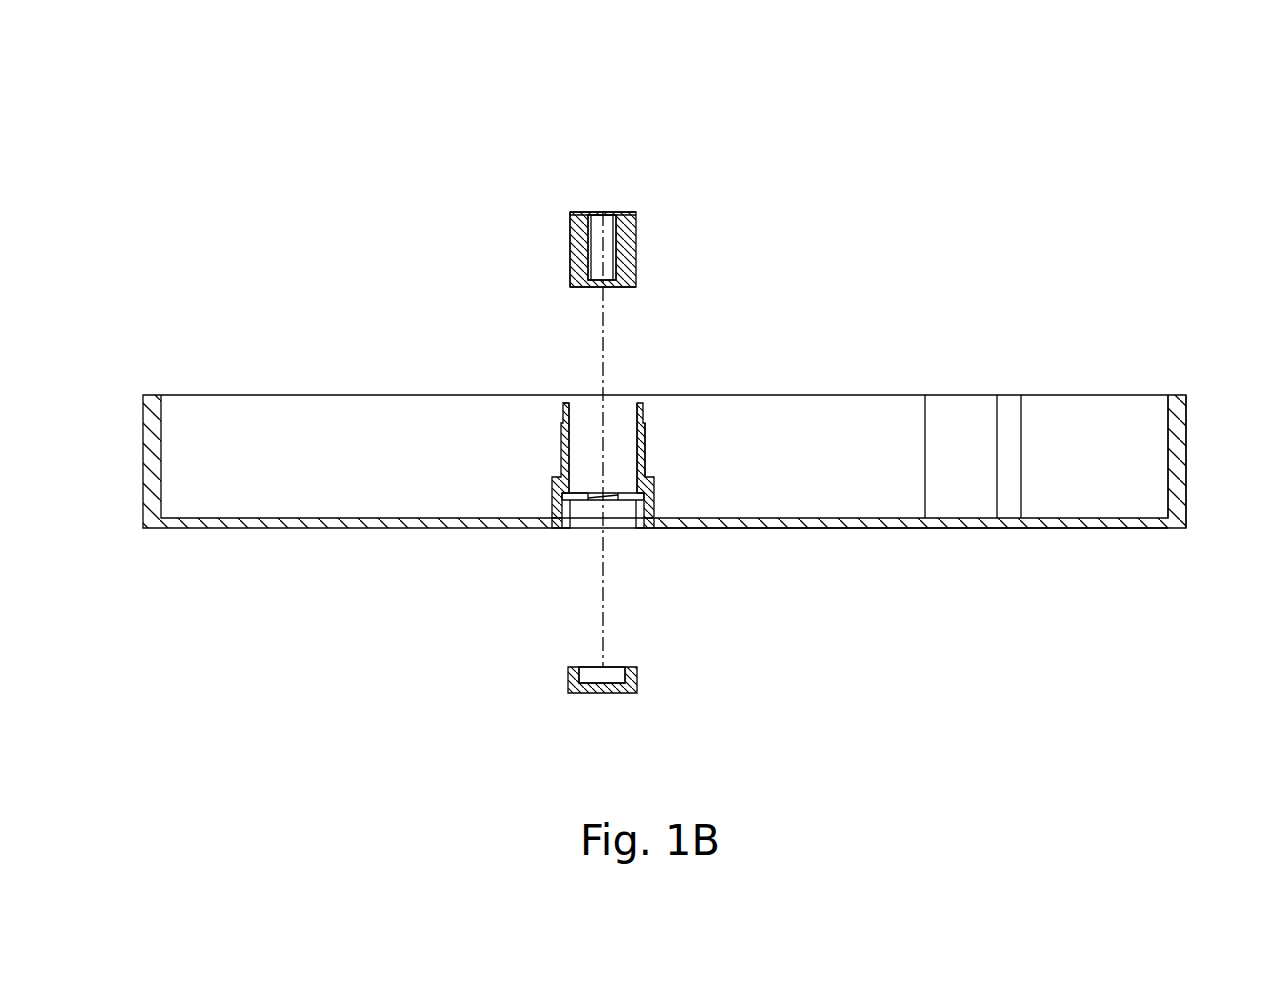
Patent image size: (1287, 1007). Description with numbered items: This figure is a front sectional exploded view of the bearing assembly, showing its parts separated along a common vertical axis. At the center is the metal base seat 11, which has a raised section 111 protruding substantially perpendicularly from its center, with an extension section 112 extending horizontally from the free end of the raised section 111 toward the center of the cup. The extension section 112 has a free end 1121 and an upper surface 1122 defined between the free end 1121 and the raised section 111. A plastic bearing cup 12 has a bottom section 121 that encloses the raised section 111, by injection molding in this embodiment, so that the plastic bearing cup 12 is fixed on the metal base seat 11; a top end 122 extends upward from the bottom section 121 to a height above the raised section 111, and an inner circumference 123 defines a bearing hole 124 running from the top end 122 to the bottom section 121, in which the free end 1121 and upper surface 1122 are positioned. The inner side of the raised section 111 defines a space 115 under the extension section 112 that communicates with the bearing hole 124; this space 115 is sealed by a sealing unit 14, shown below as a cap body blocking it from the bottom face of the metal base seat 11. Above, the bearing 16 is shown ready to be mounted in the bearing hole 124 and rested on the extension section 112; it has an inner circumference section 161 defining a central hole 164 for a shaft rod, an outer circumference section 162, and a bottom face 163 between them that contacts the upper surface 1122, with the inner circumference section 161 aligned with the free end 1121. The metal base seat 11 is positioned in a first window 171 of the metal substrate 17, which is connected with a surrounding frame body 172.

The metal base seat 11 is at (735, 520).
The plastic bearing cup 12 is at (561, 430).
The sealing unit 14 is at (583, 693).
The bearing 16 is at (668, 153).
The metal substrate 17 is at (1082, 528).
The raised section 111 is at (565, 518).
The extension section 112 is at (577, 500).
The space 115 is at (605, 523).
The bottom section 121 is at (555, 487).
The top end 122 is at (568, 398).
The inner circumference 123 is at (637, 424).
The bearing hole 124 is at (603, 395).
The inner circumference section 161 is at (588, 212).
The outer circumference section 162 is at (571, 215).
The bottom face 163 is at (583, 287).
The central hole 164 is at (605, 212).
The first window 171 is at (818, 530).
The frame body 172 is at (1178, 492).
The free end 1121 is at (605, 503).
The upper surface 1122 is at (586, 493).